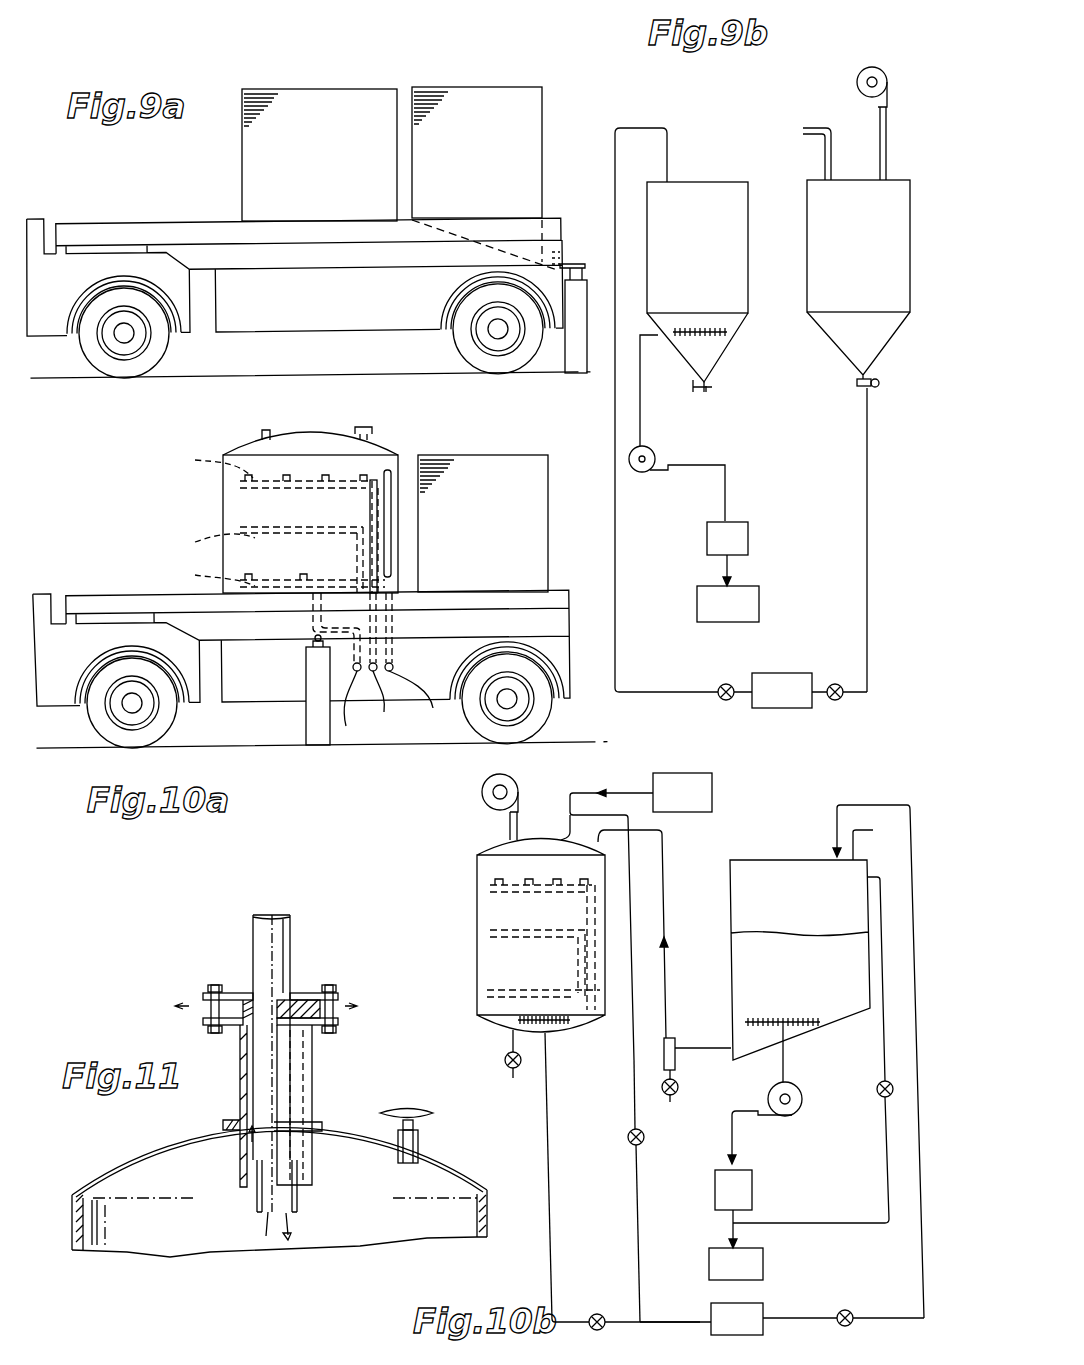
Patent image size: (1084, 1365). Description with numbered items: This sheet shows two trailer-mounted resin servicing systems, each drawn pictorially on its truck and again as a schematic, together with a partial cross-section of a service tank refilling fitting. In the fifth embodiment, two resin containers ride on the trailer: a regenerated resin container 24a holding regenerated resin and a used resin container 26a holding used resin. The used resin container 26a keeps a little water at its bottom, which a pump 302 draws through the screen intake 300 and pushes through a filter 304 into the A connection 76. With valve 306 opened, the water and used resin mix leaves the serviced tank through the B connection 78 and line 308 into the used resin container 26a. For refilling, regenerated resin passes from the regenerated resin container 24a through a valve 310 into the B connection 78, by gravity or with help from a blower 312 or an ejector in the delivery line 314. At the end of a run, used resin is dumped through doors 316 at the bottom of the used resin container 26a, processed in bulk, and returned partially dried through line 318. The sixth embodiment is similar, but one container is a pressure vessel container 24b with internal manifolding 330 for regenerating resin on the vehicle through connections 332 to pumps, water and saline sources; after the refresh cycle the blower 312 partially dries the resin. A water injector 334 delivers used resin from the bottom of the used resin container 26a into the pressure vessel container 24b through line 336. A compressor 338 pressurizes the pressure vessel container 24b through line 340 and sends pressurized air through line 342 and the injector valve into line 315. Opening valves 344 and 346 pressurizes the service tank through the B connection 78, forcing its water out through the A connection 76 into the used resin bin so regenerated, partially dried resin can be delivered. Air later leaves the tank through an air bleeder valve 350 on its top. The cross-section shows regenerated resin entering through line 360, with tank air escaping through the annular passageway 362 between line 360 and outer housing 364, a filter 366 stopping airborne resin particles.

In FIG. 9A, the used resin container 26a is at (361, 88).
In FIG. 9B, the used resin container 26a is at (702, 182).
In FIG. 10A, the used resin container 26a is at (537, 456).
In FIG. 10B, the used resin container 26a is at (800, 860).
In FIG. 9A, the regenerated resin container 24a is at (515, 86).
In FIG. 9B, the regenerated resin container 24a is at (863, 180).
In FIG. 10A, the pressure vessel container 24b is at (223, 510).
In FIG. 10B, the pressure vessel container 24b is at (477, 947).
In FIG. 9B, the A connection 76 is at (759, 604).
In FIG. 10B, the A connection 76 is at (763, 1263).
In FIG. 9B, the B connection 78 is at (782, 673).
In FIG. 10B, the B connection 78 is at (763, 1309).
In FIG. 9B, the screen intake 300 is at (715, 336).
In FIG. 10B, the screen intake 300 is at (785, 1070).
In FIG. 9B, the pump 302 is at (655, 451).
In FIG. 10B, the pump 302 is at (794, 1115).
In FIG. 9B, the filter 304 is at (748, 532).
In FIG. 10B, the filter 304 is at (752, 1195).
In FIG. 9B, the valve 306 is at (722, 685).
In FIG. 10B, the valve 306 is at (851, 1314).
In FIG. 9B, the line 308 is at (616, 532).
In FIG. 10B, the line 308 is at (920, 1215).
In FIG. 9A, the valve 310 is at (566, 263).
In FIG. 9B, the valve 310 is at (836, 684).
In FIG. 10B, the valve 310 is at (597, 1314).
In FIG. 9B, the blower 312 is at (858, 89).
In FIG. 10B, the blower 312 is at (483, 800).
In FIG. 9B, the delivery line 314 is at (867, 470).
In FIG. 10B, the delivery line 314 is at (547, 1160).
In FIG. 10B, the line 315 is at (668, 1321).
In FIG. 9B, the doors 316 is at (712, 388).
In FIG. 9B, the line 318 is at (822, 149).
In FIG. 10A, the internal manifolding 330 is at (203, 516).
In FIG. 10A, the connections 332 is at (384, 671).
In FIG. 10B, the water injector 334 is at (675, 1042).
In FIG. 10B, the line 336 is at (664, 877).
In FIG. 10B, the compressor 338 is at (712, 786).
In FIG. 10B, the line 340 is at (605, 792).
In FIG. 10B, the line 342 is at (634, 1088).
In FIG. 10B, the valve 344 is at (644, 1138).
In FIG. 10B, the valve 346 is at (878, 1089).
In FIG. 11, the air bleeder valve 350 is at (414, 1128).
In FIG. 11, the line 360 is at (290, 936).
In FIG. 11, the annular passageway 362 is at (242, 1088).
In FIG. 11, the outer housing 364 is at (312, 1089).
In FIG. 11, the filter 366 is at (312, 998).